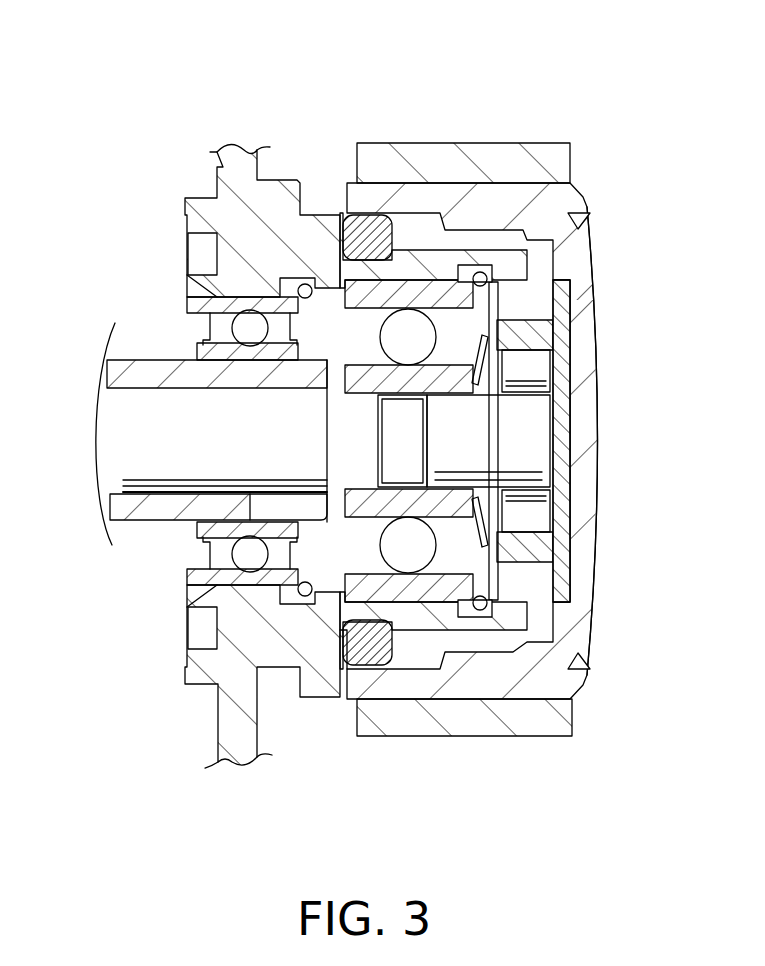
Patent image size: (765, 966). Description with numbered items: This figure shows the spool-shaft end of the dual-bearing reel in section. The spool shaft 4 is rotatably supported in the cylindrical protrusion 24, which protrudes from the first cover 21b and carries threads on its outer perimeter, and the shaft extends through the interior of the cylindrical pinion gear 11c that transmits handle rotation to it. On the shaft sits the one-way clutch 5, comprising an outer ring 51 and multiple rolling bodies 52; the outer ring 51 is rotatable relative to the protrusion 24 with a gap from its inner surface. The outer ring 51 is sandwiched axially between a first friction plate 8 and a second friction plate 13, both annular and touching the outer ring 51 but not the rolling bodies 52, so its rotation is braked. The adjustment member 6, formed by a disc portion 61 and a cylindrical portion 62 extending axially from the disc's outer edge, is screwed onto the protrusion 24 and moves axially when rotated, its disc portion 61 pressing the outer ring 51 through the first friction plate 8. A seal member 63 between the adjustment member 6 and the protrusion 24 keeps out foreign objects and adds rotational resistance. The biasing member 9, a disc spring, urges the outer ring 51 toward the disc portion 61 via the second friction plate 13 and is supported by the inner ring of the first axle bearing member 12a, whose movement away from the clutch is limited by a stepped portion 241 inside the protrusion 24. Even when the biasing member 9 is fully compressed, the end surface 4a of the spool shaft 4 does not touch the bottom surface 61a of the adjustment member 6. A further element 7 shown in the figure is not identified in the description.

The spool shaft 4 is at (122, 437).
The end surface 4a is at (557, 430).
The one-way clutch 5 is at (588, 402).
The adjustment member 6 is at (522, 441).
The lower cover 7 is at (543, 738).
The first friction plate 8 is at (543, 552).
The biasing member 9 is at (497, 602).
The pinion gear 11c is at (147, 360).
The first axle bearing member 12a is at (412, 602).
The second friction plate 13 is at (500, 585).
The first cover 21b is at (218, 731).
The protrusion 24 is at (322, 672).
The stepped portion 241 is at (348, 668).
The outer ring 51 is at (553, 543).
The rolling bodies 52 is at (537, 503).
The disc portion 61 is at (575, 360).
The bottom surface 61a is at (585, 402).
The cylindrical portion 62 is at (421, 190).
The seal member 63 is at (373, 228).